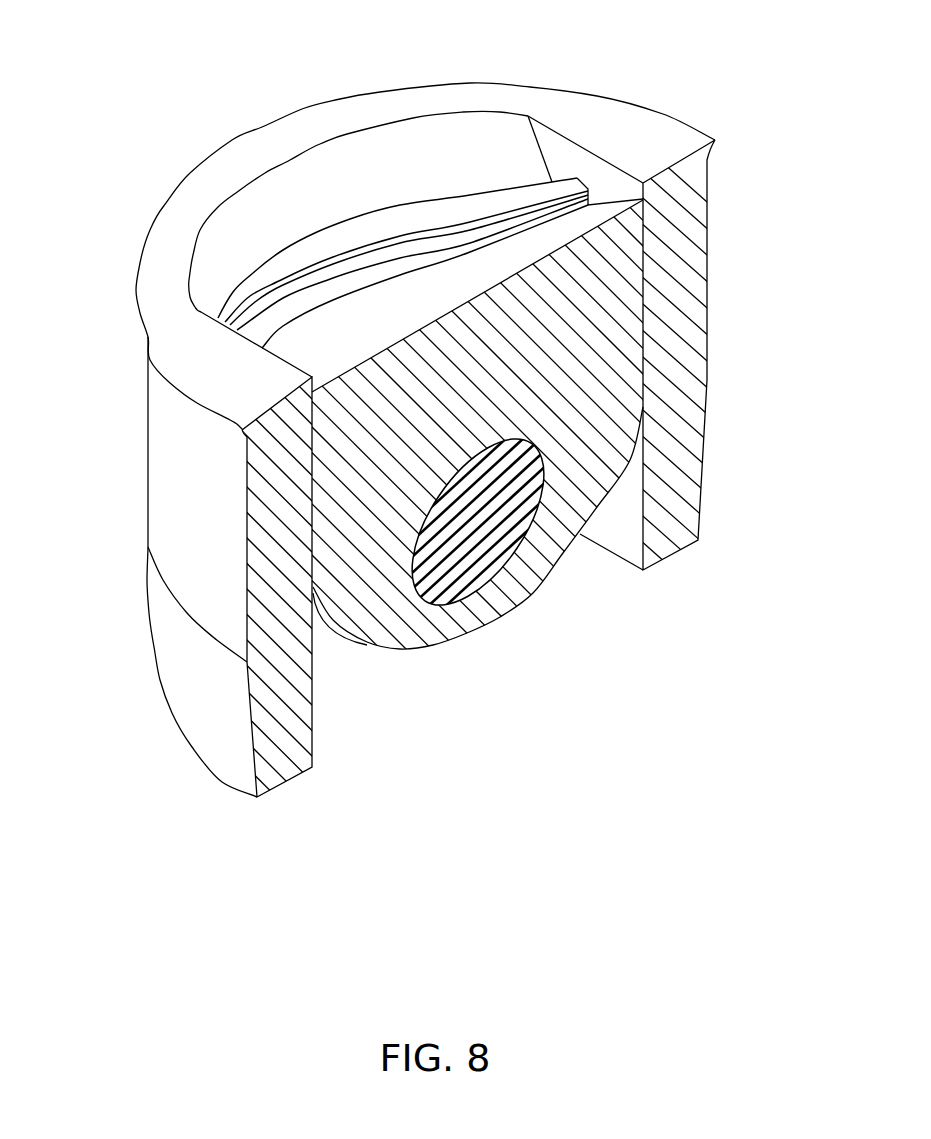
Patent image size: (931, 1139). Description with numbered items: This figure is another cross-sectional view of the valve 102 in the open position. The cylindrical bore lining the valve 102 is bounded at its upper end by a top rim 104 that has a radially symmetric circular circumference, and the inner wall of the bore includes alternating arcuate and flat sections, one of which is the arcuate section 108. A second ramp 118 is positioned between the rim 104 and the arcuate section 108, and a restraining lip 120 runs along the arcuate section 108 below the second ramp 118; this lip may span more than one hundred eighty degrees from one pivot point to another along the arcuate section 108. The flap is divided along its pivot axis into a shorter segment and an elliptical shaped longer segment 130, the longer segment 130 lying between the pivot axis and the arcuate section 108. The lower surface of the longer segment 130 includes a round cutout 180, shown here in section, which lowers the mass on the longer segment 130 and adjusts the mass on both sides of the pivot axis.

The valve 102 is at (414, 52).
The top rim 104 is at (222, 175).
The arcuate section 108 is at (398, 215).
The second ramp 118 is at (368, 157).
The restraining lip 120 is at (280, 317).
The longer segment 130 is at (585, 353).
The round cutout 180 is at (498, 570).